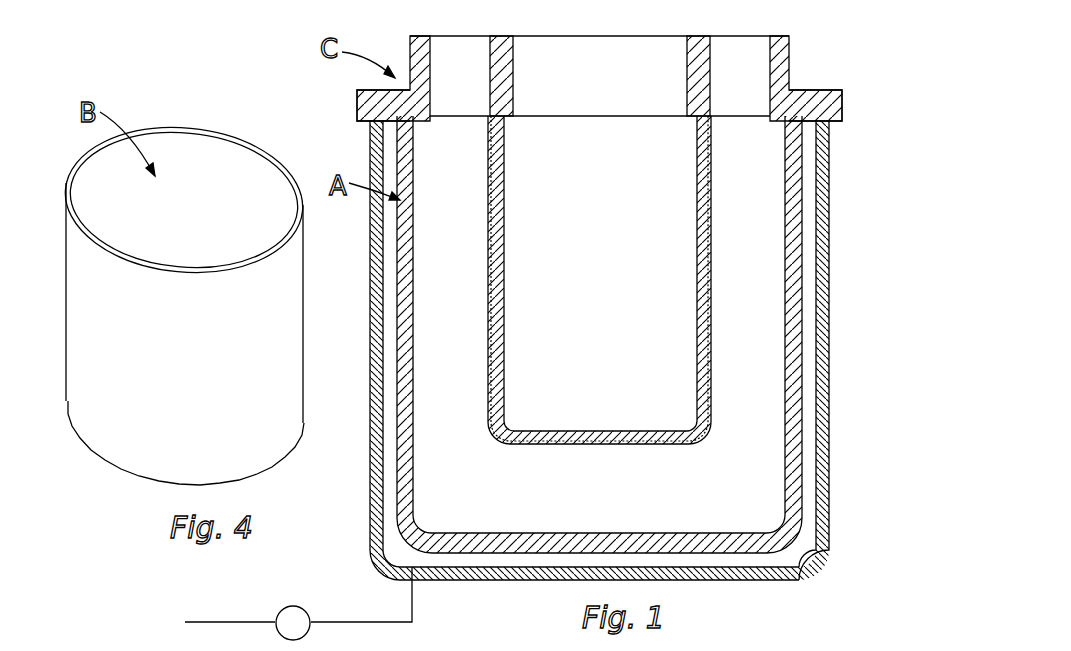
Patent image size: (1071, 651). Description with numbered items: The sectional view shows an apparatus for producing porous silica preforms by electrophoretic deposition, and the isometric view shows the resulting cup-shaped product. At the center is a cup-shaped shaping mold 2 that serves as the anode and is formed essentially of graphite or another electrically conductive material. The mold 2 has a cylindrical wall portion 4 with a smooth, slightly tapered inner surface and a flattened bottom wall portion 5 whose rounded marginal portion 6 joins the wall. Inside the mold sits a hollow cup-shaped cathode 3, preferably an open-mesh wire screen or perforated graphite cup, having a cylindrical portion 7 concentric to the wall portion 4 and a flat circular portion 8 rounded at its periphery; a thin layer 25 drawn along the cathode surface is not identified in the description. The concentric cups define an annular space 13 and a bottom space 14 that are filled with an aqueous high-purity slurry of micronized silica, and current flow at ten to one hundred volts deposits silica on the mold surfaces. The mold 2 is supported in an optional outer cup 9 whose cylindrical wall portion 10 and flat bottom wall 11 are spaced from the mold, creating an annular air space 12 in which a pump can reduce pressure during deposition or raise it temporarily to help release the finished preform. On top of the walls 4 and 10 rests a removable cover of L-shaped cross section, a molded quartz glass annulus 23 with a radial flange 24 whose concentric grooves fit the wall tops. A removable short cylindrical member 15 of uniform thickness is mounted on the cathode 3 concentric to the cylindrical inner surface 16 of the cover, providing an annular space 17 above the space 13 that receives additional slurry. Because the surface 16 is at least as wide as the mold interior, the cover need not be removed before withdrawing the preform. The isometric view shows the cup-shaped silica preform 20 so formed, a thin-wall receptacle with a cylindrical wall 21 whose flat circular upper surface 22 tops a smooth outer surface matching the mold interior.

In FIG. 1, the shaping mold 2 is at (398, 334).
In FIG. 1, the cathode 3 is at (505, 361).
In FIG. 1, the cylindrical wall portion 4 is at (414, 414).
In FIG. 1, the bottom wall portion 5 is at (553, 533).
In FIG. 1, the rounded marginal portion 6 is at (424, 528).
In FIG. 1, the cylindrical portion 7 is at (505, 237).
In FIG. 1, the flat circular portion 8 is at (634, 430).
In FIG. 1, the outer cup 9 is at (371, 487).
In FIG. 1, the cylindrical wall portion 10 is at (371, 248).
In FIG. 1, the flat bottom wall 11 is at (486, 581).
In FIG. 1, the annular air space 12 is at (390, 440).
In FIG. 1, the annular space 13 is at (599, 327).
In FIG. 1, the bottom space 14 is at (595, 481).
In FIG. 1, the short cylindrical member 15 is at (507, 72).
In FIG. 1, the cylindrical inner surface 16 is at (427, 50).
In FIG. 1, the annular space 17 is at (602, 73).
In FIG. 4, the silica preform 20 is at (95, 446).
In FIG. 4, the cylindrical wall 21 is at (305, 333).
In FIG. 4, the flat circular upper surface 22 is at (213, 141).
In FIG. 1, the quartz glass annulus 23 is at (843, 64).
In FIG. 1, the radial flange 24 is at (362, 97).
In FIG. 1, the coating 25 is at (487, 172).